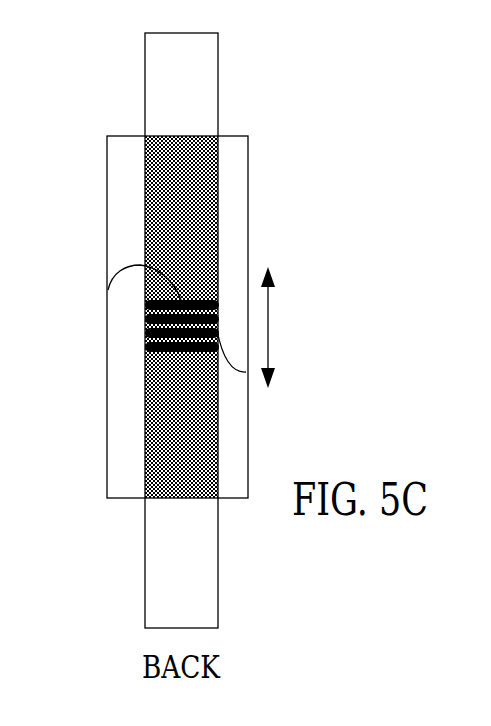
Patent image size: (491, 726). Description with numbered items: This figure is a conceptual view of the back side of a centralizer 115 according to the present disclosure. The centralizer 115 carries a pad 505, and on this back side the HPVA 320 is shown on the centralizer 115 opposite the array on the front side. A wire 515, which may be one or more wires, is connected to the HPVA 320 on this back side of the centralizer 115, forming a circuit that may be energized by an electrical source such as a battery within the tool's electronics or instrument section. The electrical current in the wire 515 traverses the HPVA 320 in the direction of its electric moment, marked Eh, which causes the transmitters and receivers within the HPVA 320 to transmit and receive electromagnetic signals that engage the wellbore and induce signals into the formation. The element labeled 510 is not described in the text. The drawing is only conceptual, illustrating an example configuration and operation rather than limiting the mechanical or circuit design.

The centralizer 115 is at (205, 330).
The pad 505 is at (192, 175).
The housing back 510 is at (248, 242).
The wire 515 is at (130, 268).
The HPVA 320 is at (143, 331).